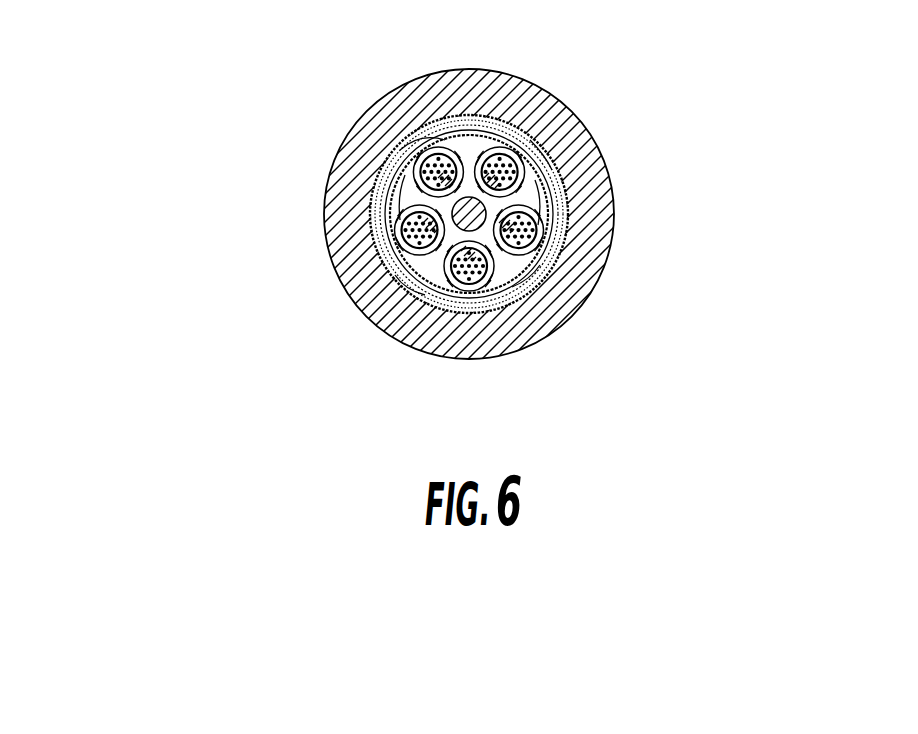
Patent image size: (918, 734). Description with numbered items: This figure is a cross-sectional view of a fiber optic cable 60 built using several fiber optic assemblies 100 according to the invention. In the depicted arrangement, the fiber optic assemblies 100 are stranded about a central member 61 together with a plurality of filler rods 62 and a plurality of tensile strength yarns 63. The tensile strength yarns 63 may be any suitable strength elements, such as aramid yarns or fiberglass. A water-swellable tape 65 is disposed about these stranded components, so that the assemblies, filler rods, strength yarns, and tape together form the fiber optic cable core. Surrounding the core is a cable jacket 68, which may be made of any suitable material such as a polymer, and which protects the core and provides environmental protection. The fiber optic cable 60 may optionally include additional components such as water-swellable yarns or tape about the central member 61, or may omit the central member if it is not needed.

The fiber optic cable 60 is at (466, 203).
The central member 61 is at (603, 162).
The filler rods 62 is at (583, 232).
The tensile strength yarns 63 is at (492, 125).
The water-swellable tape 65 is at (405, 340).
The cable jacket 68 is at (330, 237).
The fiber optic assemblies 100 is at (452, 152).